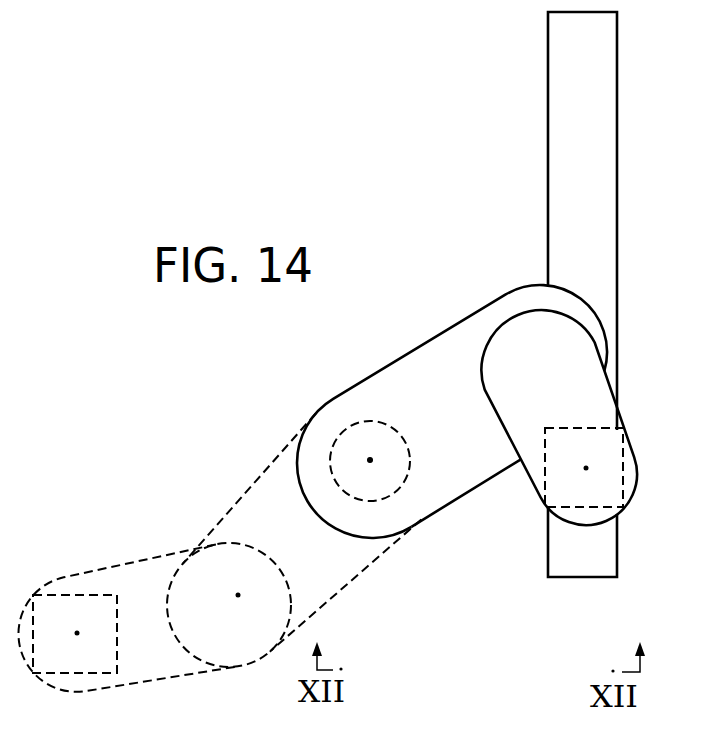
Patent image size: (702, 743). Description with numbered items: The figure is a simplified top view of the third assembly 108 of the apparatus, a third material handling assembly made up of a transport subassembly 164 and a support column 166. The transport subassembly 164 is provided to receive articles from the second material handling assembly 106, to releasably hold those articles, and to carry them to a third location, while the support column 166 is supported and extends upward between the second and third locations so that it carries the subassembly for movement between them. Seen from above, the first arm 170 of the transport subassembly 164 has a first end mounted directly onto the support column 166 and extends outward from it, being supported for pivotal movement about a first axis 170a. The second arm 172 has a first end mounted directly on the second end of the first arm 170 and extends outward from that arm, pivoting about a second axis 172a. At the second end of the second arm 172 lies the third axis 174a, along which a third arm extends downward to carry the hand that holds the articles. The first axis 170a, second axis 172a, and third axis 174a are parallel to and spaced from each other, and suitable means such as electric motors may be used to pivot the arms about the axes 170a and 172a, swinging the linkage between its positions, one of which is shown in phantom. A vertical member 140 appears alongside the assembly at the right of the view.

The second material handling assembly 106 is at (486, 98).
The third assembly 108 is at (438, 256).
The support member 140 is at (603, 180).
The transport subassembly 164 is at (422, 313).
The support column 166 is at (412, 452).
The first arm 170 is at (503, 293).
The first axis 170a is at (370, 460).
The second arm 172 is at (595, 398).
The second axis 172a is at (535, 357).
The third axis 174a is at (586, 468).